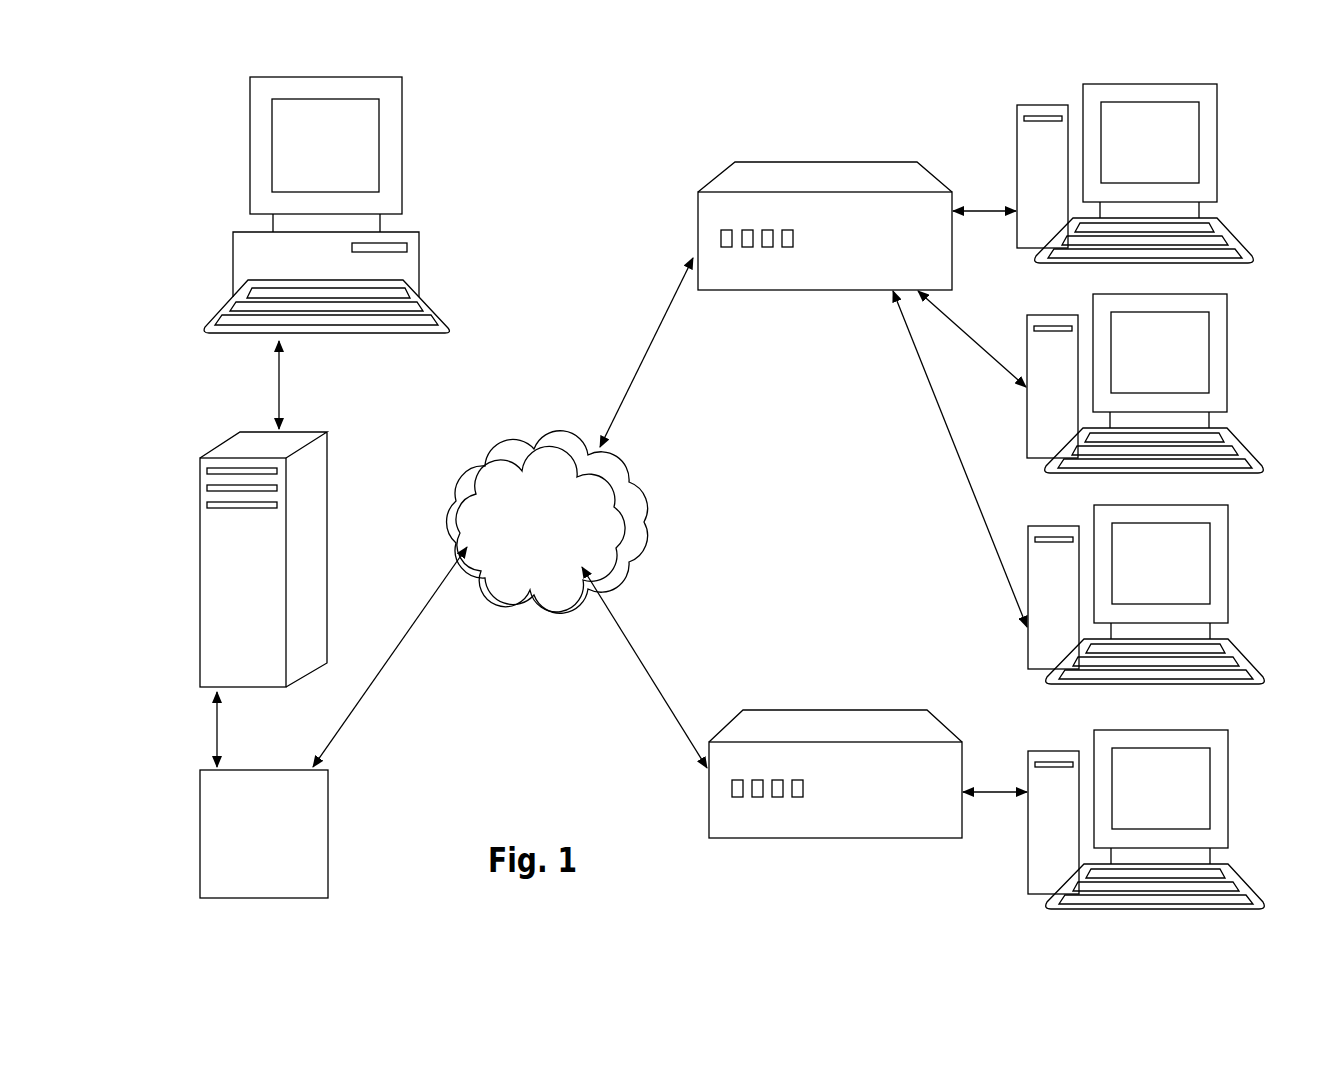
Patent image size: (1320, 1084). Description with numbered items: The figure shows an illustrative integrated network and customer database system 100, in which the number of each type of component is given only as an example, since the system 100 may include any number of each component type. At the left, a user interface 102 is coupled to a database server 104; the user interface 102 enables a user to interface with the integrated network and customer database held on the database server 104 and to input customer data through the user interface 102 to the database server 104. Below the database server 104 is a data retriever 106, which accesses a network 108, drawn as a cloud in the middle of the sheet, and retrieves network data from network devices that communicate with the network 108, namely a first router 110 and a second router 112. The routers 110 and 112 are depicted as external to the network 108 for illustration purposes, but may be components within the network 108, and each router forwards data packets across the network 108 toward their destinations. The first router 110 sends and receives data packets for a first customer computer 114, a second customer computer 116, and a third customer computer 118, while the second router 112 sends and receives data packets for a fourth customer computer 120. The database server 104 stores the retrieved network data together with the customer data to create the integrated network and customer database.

The integrated network and customer database system 100 is at (565, 140).
The user interface 102 is at (407, 337).
The database server 104 is at (265, 688).
The data retriever 106 is at (328, 850).
The network 108 is at (518, 595).
The first router 110 is at (773, 290).
The second router 112 is at (772, 838).
The first customer computer 114 is at (1043, 260).
The second customer computer 116 is at (1060, 472).
The third customer computer 118 is at (1043, 663).
The fourth customer computer 120 is at (1027, 843).